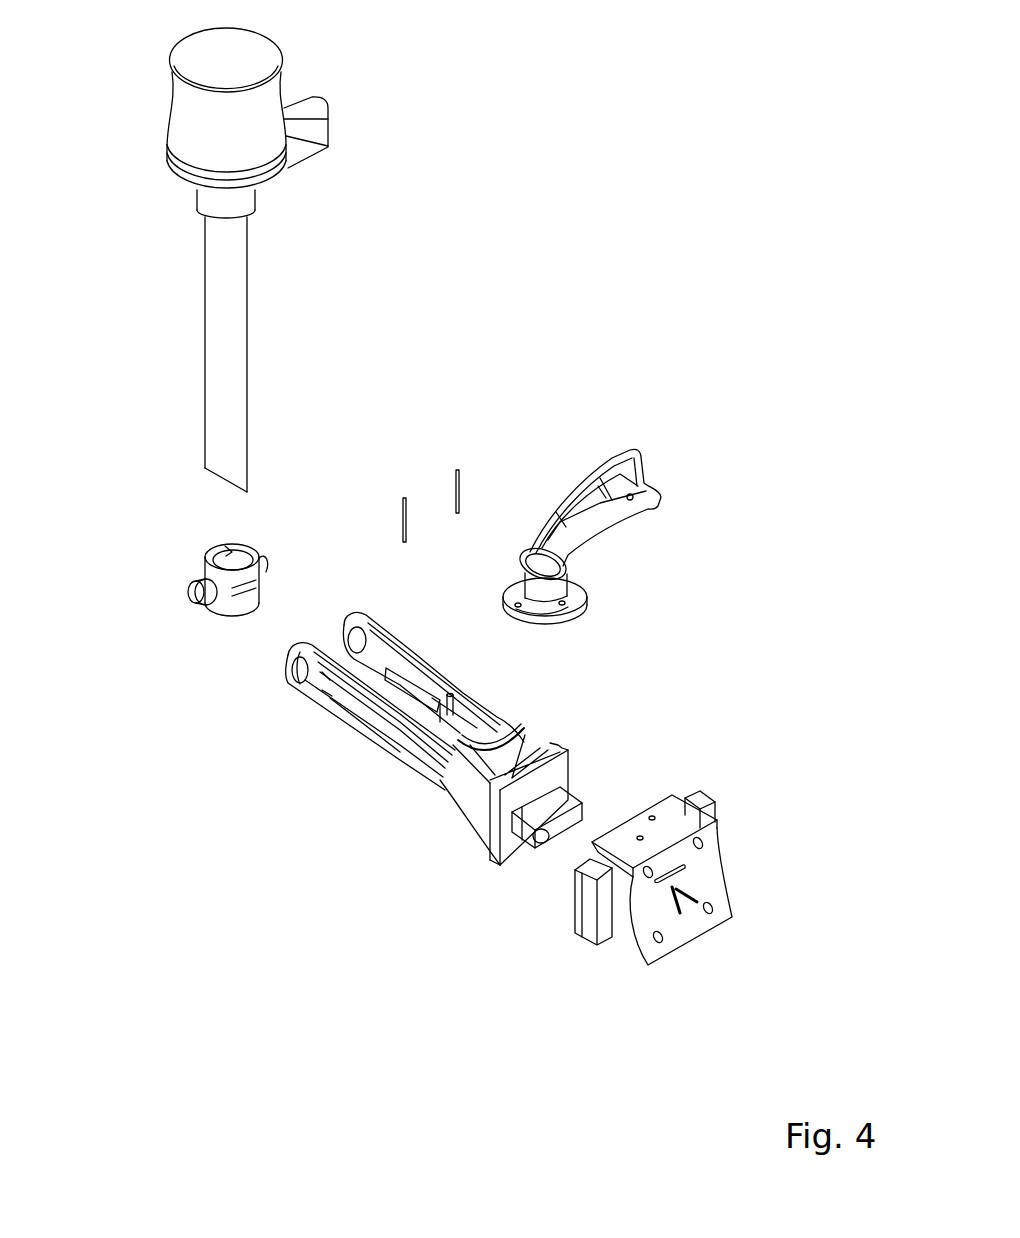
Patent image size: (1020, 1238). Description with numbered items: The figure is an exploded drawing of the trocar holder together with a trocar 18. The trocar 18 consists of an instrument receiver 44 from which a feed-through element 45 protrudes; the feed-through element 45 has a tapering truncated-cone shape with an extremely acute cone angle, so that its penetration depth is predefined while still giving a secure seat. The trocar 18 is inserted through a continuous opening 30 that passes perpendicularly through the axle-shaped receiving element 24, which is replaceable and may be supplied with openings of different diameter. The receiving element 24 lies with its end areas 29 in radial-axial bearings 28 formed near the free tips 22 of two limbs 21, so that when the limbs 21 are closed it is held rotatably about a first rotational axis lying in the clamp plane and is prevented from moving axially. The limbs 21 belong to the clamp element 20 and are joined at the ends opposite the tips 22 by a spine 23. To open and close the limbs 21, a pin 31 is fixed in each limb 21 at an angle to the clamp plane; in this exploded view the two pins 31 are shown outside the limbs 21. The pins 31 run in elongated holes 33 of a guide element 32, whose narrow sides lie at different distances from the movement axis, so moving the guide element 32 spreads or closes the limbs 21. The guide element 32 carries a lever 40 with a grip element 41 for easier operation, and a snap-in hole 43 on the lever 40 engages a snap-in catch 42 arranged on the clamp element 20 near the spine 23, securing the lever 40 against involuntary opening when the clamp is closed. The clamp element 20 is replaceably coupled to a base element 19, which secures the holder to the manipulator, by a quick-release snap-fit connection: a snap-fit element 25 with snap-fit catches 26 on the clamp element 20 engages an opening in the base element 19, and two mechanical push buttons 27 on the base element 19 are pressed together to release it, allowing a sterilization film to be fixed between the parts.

The trocar 18 is at (163, 98).
The instrument receiver 44 is at (268, 100).
The feed-through element 45 is at (238, 296).
The receiving element 24 is at (212, 570).
The continuous opening 30 is at (225, 548).
The end areas 29 is at (262, 558).
The pin 31 is at (457, 468).
The lever 40 is at (636, 468).
The grip element 41 is at (612, 472).
The snap-in hole 43 is at (640, 517).
The guide element 32 is at (578, 588).
The elongated holes 33 is at (572, 612).
The clamp element 20 is at (418, 781).
The limbs 21 is at (424, 662).
The free tips 22 is at (295, 652).
The radial-axial bearing 28 is at (327, 705).
The spine 23 is at (473, 757).
The snap-in catch 42 is at (523, 733).
The snap-fit catches 26 is at (580, 840).
The base element 19 is at (703, 884).
The snap-fit element 25 is at (583, 800).
The mechanical push buttons 27 is at (717, 810).